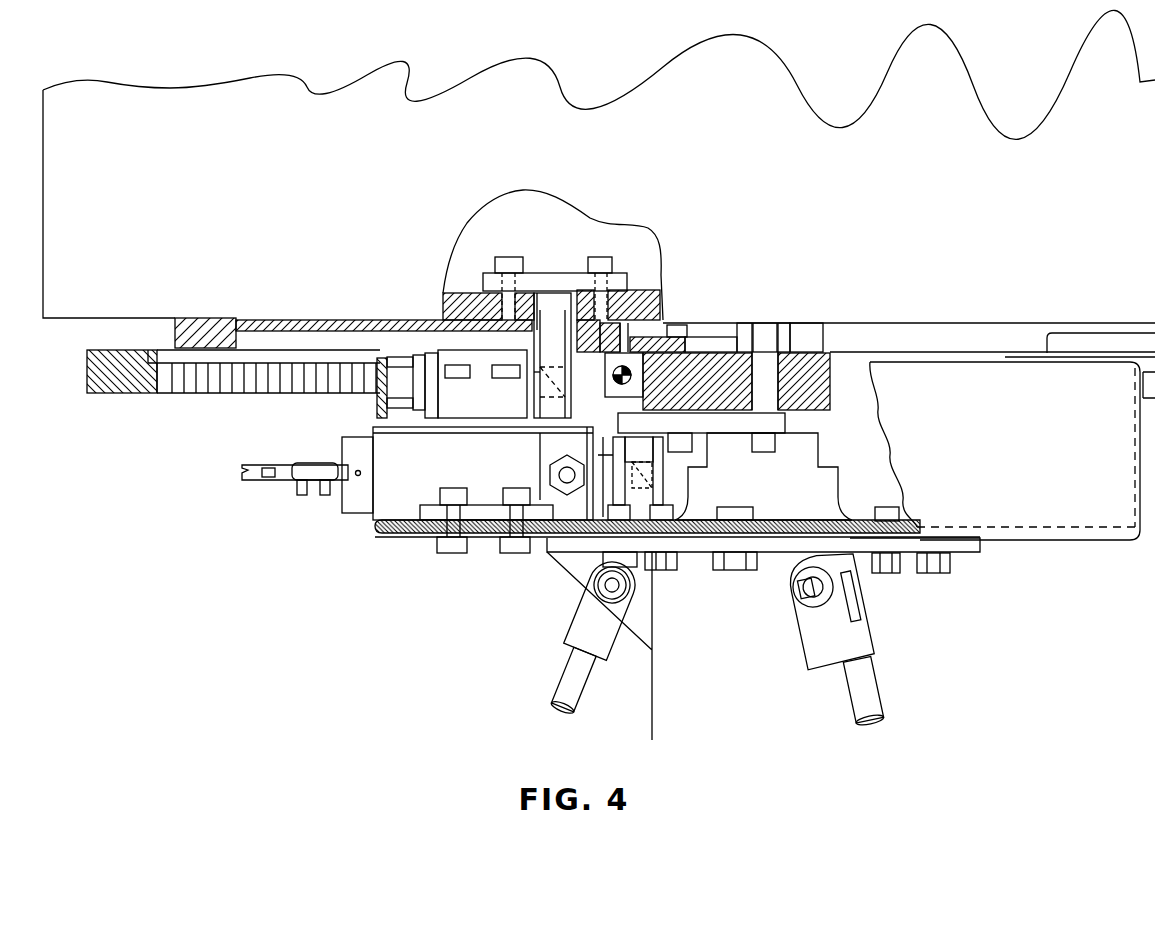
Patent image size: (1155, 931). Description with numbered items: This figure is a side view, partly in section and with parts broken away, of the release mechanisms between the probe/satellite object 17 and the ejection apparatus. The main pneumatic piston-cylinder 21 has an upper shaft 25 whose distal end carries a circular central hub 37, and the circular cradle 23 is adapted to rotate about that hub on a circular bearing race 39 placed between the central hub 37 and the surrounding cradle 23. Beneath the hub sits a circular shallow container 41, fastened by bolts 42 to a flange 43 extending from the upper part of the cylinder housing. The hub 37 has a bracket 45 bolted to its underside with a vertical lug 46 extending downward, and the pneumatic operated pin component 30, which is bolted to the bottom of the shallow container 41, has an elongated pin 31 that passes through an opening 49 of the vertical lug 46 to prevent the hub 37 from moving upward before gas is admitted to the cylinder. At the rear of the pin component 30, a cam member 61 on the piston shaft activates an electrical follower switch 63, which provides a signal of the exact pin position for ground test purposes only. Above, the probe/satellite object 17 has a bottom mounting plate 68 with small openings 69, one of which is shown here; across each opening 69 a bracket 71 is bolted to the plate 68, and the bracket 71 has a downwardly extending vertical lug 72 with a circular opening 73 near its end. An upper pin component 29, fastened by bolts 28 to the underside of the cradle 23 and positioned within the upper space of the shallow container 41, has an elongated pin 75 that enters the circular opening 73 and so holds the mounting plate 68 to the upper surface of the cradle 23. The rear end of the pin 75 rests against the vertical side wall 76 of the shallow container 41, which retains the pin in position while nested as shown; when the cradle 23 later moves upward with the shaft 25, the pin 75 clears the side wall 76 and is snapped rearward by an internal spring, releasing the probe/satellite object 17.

The probe/satellite object 17 is at (714, 185).
The main pneumatic piston-cylinder 21 is at (720, 698).
The circular cradle 23 is at (215, 320).
The upper shaft 25 is at (785, 463).
The bolts 28 is at (459, 378).
The upper pin component 29 is at (490, 410).
The pneumatic operated pin component 30 is at (456, 473).
The elongated pin 31 is at (588, 540).
The circular central hub 37 is at (708, 345).
The circular bearing race 39 is at (630, 370).
The circular shallow container 41 is at (1019, 460).
The bolts 42 is at (887, 565).
The flange 43 is at (965, 553).
The bracket 45 is at (745, 428).
The vertical lug 46 is at (635, 477).
The opening 49 is at (655, 485).
The cam member 61 is at (255, 470).
The electrical follower switch 63 is at (318, 472).
The bottom mounting plate 68 is at (463, 292).
The small opening 69 is at (537, 292).
The bracket 71 is at (567, 280).
The vertical lug 72 is at (552, 355).
The circular opening 73 is at (533, 370).
The elongated pin 75 is at (390, 393).
The vertical side wall 76 is at (377, 417).